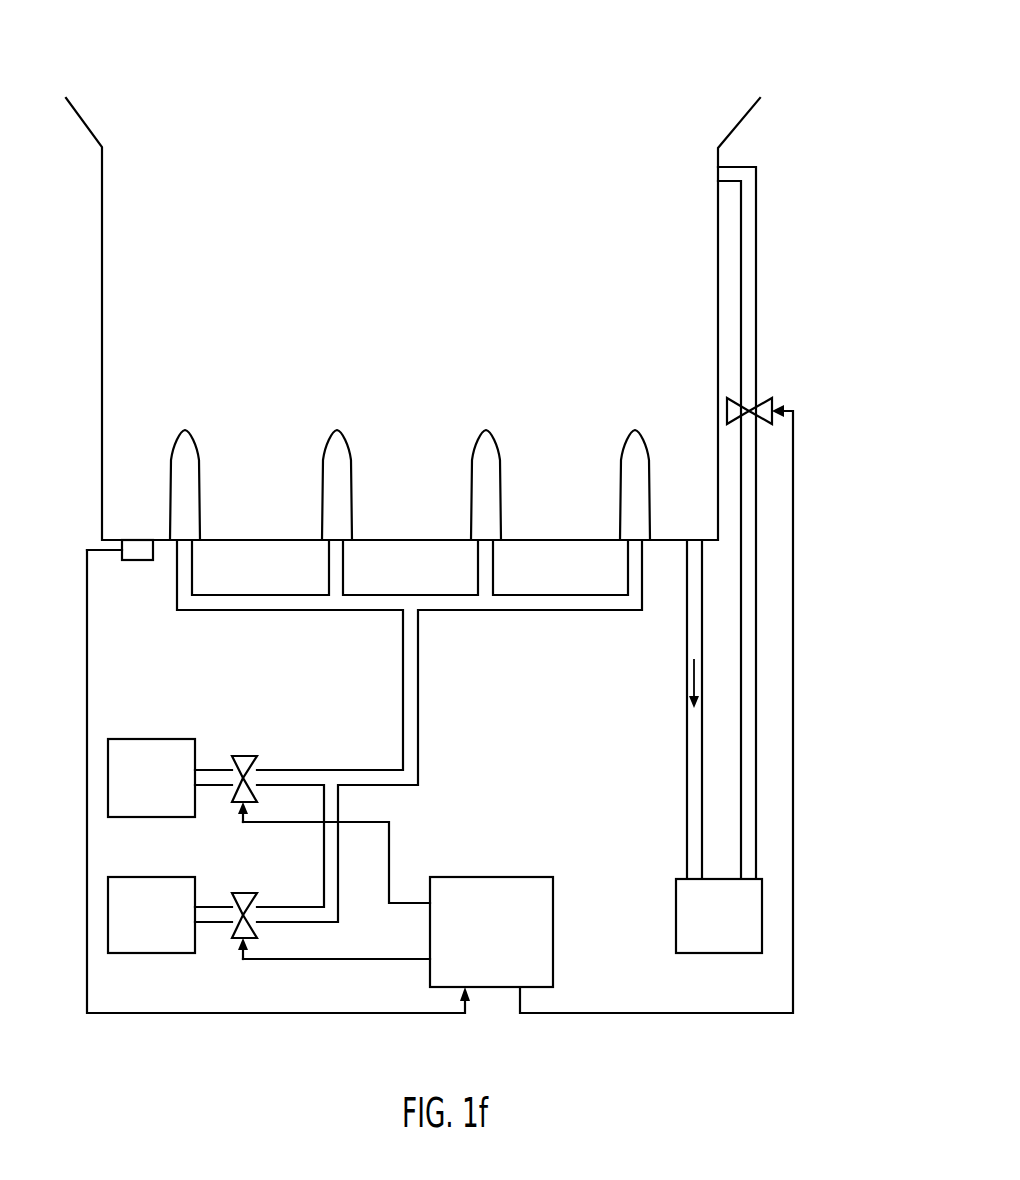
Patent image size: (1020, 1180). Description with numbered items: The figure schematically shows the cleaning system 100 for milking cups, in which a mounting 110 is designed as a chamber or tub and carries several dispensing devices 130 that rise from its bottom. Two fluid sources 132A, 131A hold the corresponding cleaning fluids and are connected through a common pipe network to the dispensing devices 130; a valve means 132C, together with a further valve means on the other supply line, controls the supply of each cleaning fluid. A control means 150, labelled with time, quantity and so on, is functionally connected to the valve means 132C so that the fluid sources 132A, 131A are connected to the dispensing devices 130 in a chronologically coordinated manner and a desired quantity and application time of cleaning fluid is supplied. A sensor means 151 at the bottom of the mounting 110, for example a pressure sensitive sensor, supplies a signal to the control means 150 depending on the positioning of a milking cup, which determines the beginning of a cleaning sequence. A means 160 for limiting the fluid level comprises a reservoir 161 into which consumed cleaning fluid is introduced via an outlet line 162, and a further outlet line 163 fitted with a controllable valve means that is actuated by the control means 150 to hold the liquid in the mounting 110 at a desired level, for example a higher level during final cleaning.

The cleaning system 100 is at (802, 80).
The mounting 110 is at (101, 371).
The dispensing devices 130 is at (220, 448).
The sensor means 151 is at (138, 561).
The fluid source 132A is at (177, 793).
The fluid source 131A is at (177, 930).
The valve means 132C is at (256, 762).
The control means 150 is at (454, 876).
The means for limiting the fluid level 160 is at (657, 968).
The reservoir 161 is at (734, 932).
The outlet line 162 is at (686, 782).
The outlet line 163 is at (757, 228).